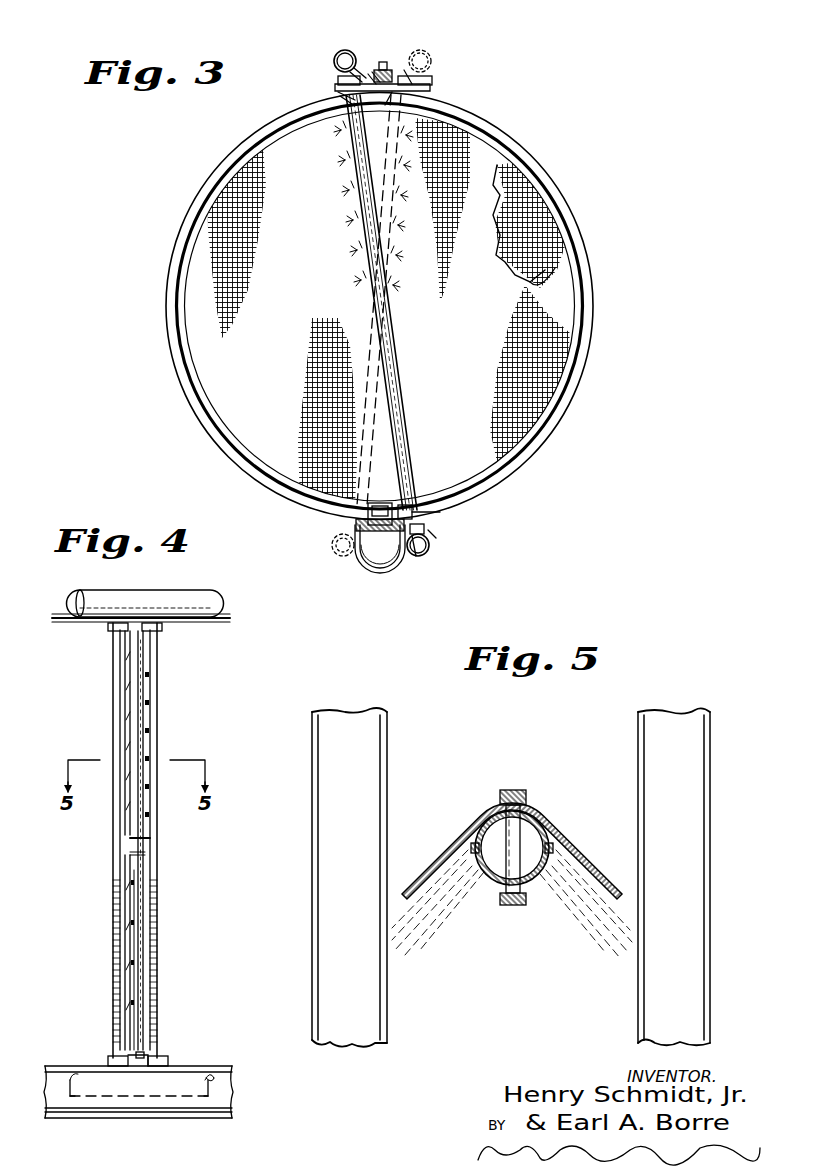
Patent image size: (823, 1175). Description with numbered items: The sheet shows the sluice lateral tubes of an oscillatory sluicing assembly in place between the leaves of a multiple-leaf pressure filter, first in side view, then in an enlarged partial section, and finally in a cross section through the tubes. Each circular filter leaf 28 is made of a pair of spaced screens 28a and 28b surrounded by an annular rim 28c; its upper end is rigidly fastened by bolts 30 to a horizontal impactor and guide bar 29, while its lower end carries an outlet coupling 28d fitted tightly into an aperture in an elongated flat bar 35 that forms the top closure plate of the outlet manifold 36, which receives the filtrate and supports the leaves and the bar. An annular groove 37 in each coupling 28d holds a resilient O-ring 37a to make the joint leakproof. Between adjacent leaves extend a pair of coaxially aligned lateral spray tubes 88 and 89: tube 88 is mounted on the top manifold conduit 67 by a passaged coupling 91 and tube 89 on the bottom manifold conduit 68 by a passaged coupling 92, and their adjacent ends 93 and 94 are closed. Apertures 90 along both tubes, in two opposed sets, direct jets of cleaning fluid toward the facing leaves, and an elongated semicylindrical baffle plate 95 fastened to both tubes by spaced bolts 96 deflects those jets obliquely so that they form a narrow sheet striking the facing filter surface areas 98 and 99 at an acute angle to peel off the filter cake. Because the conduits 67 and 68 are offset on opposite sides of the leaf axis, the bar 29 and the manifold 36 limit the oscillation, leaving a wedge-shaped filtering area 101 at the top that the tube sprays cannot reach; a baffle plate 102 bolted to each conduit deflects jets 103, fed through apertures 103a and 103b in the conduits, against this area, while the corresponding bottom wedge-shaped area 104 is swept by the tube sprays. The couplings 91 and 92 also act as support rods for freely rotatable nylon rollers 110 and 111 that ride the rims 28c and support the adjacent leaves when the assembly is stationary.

In FIG. 3, the filter leaf 28 is at (570, 197).
In FIG. 4, the filter leaf 28 is at (110, 686).
In FIG. 5, the filter leaf 28 is at (388, 768).
In FIG. 3, the screen 28a is at (490, 178).
In FIG. 5, the screen 28a is at (700, 952).
In FIG. 3, the screen 28b is at (555, 245).
In FIG. 3, the annular rim 28c is at (504, 140).
In FIG. 4, the annular rim 28c is at (152, 936).
In FIG. 5, the annular rim 28c is at (316, 968).
In FIG. 3, the outlet coupling 28d is at (405, 506).
In FIG. 4, the outlet coupling 28d is at (110, 1060).
In FIG. 3, the impactor and guide bar 29 is at (389, 68).
In FIG. 4, the impactor and guide bar 29 is at (226, 617).
In FIG. 3, the bolt 30 is at (398, 80).
In FIG. 3, the elongated flat bar 35 is at (358, 560).
In FIG. 3, the outlet manifold 36 is at (380, 568).
In FIG. 4, the outlet manifold 36 is at (130, 1120).
In FIG. 3, the annular groove 37 is at (375, 503).
In FIG. 3, the O-ring 37a is at (366, 562).
In FIG. 3, the top manifold conduit 67 is at (334, 62).
In FIG. 4, the top manifold conduit 67 is at (128, 600).
In FIG. 3, the bottom manifold conduit 68 is at (432, 60).
In FIG. 4, the bottom manifold conduit 68 is at (240, 1078).
In FIG. 4, the lateral spray tube 88 is at (140, 672).
In FIG. 5, the lateral spray tube 88 is at (528, 832).
In FIG. 4, the lateral spray tube 89 is at (140, 984).
In FIG. 4, the aperture 90 is at (150, 704).
In FIG. 5, the aperture 90 is at (476, 862).
In FIG. 3, the passaged coupling 91 is at (338, 82).
In FIG. 4, the passaged coupling 91 is at (110, 628).
In FIG. 3, the passaged coupling 92 is at (426, 529).
In FIG. 4, the passaged coupling 92 is at (148, 1060).
In FIG. 4, the closed end 93 is at (142, 842).
In FIG. 4, the closed end 94 is at (145, 856).
In FIG. 3, the semicylindrical baffle plate 95 is at (378, 352).
In FIG. 4, the semicylindrical baffle plate 95 is at (130, 850).
In FIG. 5, the semicylindrical baffle plate 95 is at (480, 855).
In FIG. 5, the bolt 96 is at (520, 835).
In FIG. 5, the facing filter surface area 98 is at (388, 1010).
In FIG. 5, the facing filter surface area 99 is at (638, 1000).
In FIG. 3, the wedge-shaped filtering area 101 is at (357, 205).
In FIG. 3, the baffle plate 102 is at (374, 86).
In FIG. 3, the jet 103 is at (374, 96).
In FIG. 3, the aperture 103a is at (357, 70).
In FIG. 3, the aperture 103b is at (418, 560).
In FIG. 3, the wedge-shaped filtering area 104 is at (378, 440).
In FIG. 3, the roller 110 is at (338, 100).
In FIG. 4, the roller 110 is at (150, 631).
In FIG. 3, the roller 111 is at (470, 506).
In FIG. 4, the roller 111 is at (152, 1056).